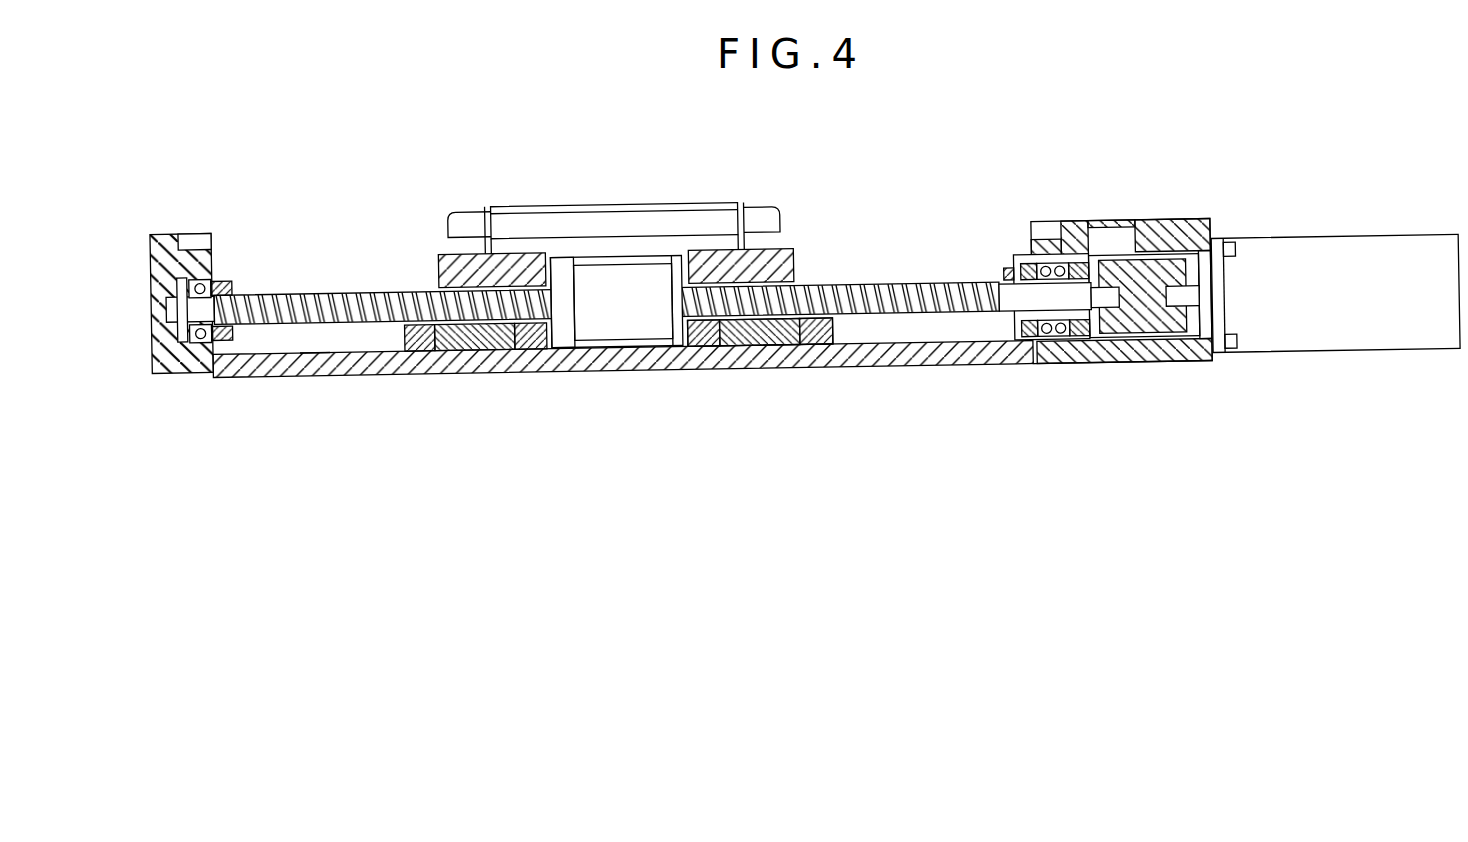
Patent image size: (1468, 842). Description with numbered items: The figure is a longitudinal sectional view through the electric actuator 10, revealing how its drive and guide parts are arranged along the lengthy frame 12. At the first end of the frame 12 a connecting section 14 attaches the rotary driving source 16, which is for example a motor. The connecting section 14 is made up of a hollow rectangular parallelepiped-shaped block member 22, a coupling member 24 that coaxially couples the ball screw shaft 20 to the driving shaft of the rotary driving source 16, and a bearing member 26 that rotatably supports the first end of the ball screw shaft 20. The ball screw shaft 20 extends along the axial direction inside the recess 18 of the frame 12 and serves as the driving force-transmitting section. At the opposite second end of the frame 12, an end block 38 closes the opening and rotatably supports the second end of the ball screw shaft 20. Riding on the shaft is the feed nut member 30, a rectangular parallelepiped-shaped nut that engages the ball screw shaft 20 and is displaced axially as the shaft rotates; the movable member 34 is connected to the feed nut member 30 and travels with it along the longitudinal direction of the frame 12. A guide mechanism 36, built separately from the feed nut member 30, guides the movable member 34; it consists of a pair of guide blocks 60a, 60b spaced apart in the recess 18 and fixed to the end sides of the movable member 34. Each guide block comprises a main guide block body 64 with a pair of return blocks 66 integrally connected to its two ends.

The electric actuator 10 is at (1338, 64).
The frame 12 is at (922, 380).
The connecting section 14 is at (1152, 232).
The rotary driving source 16 is at (1357, 355).
The recess 18 is at (311, 350).
The ball screw shaft 20 is at (381, 300).
The block member 22 is at (1097, 356).
The coupling member 24 is at (1146, 330).
The bearing member 26 is at (1046, 356).
The feed nut member 30 is at (605, 335).
The movable member 34 is at (717, 216).
The guide mechanism 36 is at (795, 322).
The end block 38 is at (179, 268).
The guide block 60a is at (452, 350).
The guide block 60b is at (781, 352).
The main guide block body 64 is at (473, 350).
The return block 66 is at (420, 350).